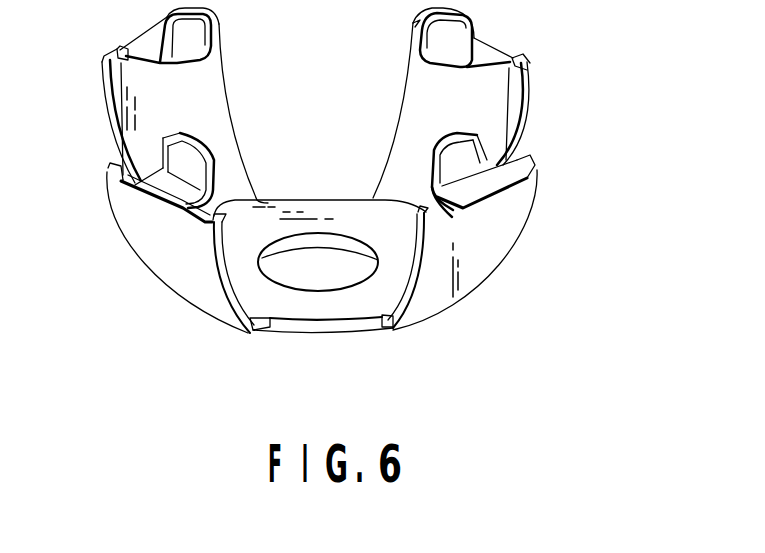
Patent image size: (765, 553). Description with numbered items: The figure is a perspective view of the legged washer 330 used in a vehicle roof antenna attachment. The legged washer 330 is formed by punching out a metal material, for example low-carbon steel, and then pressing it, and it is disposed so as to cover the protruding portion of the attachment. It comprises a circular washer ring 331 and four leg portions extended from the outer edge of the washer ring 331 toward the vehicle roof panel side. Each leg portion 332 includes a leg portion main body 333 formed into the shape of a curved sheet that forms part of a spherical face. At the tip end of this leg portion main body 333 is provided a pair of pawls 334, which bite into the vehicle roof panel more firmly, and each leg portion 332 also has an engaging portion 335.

The legged washer 330 is at (328, 200).
The washer ring 331 is at (330, 302).
The leg portion 332 is at (202, 293).
The leg portion main body 333 is at (492, 247).
The pawl 334 is at (533, 171).
The engaging portion 335 is at (463, 148).